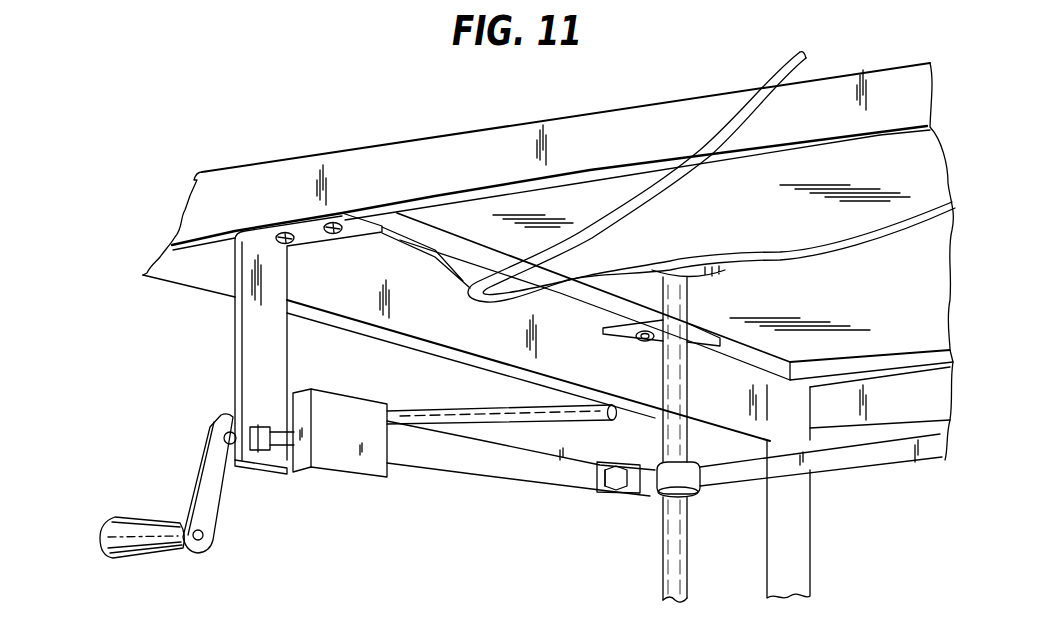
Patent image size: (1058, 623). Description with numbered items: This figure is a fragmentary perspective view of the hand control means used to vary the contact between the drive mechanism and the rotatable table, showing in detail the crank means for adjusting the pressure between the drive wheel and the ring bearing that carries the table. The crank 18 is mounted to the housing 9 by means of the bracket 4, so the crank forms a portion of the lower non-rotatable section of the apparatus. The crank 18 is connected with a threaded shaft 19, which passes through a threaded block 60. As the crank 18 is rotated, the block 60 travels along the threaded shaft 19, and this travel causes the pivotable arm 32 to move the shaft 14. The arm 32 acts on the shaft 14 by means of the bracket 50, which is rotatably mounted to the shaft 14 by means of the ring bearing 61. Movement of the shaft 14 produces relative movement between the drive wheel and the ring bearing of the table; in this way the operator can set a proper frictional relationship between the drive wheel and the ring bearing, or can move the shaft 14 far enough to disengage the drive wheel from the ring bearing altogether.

The housing 9 is at (242, 204).
The bracket 4 is at (236, 340).
The crank 18 is at (98, 550).
The threaded shaft 19 is at (500, 430).
The block 60 is at (358, 468).
The pivotable arm 32 is at (520, 468).
The bracket 50 is at (641, 475).
The ring bearing 61 is at (688, 497).
The shaft 14 is at (688, 560).